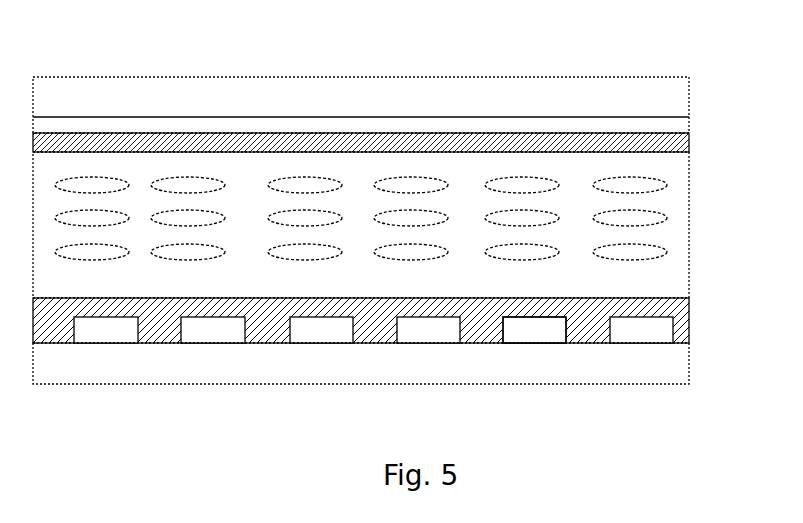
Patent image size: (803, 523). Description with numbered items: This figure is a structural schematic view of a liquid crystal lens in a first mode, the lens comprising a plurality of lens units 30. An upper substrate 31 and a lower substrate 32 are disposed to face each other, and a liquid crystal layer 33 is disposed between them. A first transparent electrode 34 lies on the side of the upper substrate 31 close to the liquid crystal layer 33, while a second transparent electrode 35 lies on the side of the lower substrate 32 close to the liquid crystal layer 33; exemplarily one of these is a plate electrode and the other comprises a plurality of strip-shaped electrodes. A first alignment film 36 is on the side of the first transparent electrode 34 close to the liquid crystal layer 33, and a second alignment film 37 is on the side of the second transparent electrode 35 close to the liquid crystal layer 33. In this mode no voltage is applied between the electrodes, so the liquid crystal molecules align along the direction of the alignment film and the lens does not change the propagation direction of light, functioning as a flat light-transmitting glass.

The lens unit 30 is at (193, 195).
The upper substrate 31 is at (689, 97).
The lower substrate 32 is at (689, 365).
The liquid crystal layer 33 is at (677, 243).
The first transparent electrode 34 is at (689, 127).
The second transparent electrode 35 is at (535, 337).
The first alignment film 36 is at (689, 146).
The second alignment film 37 is at (689, 322).